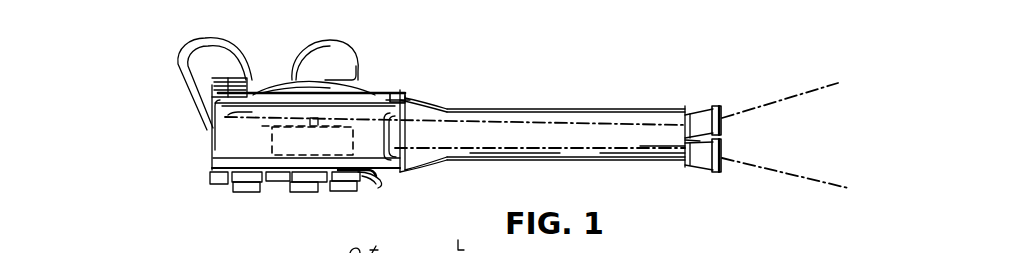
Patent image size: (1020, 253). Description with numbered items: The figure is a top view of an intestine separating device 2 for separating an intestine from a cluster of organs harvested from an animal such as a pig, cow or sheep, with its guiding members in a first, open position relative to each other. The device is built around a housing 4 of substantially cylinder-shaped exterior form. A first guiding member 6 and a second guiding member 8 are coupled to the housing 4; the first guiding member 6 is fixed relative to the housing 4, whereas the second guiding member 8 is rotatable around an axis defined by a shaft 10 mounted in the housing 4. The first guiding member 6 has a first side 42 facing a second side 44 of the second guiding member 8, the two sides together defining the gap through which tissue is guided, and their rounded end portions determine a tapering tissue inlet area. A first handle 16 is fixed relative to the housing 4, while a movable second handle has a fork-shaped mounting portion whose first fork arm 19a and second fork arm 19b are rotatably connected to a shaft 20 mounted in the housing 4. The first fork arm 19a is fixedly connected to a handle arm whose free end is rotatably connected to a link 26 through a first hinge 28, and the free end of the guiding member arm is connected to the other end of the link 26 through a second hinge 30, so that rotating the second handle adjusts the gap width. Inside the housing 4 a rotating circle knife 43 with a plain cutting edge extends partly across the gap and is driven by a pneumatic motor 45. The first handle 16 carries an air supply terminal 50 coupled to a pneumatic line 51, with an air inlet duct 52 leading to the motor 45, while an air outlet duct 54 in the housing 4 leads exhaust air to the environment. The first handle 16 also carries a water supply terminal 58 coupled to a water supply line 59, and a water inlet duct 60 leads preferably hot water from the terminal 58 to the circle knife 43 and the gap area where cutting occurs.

The intestine separating device 2 is at (86, 80).
The housing 4 is at (210, 152).
The first guiding member 6 is at (342, 58).
The second guiding member 8 is at (219, 62).
The shaft 10 is at (236, 73).
The first handle 16 is at (587, 122).
The first fork arm 19a is at (362, 174).
The second fork arm 19b is at (366, 88).
The shaft 20 is at (352, 192).
The link 26 is at (278, 187).
The first hinge 28 is at (305, 194).
The second hinge 30 is at (242, 194).
The first side 42 is at (290, 74).
The circle knife 43 is at (212, 124).
The second side 44 is at (240, 68).
The motor 45 is at (274, 132).
The air supply terminal 50 is at (697, 163).
The pneumatic line 51 is at (802, 178).
The air inlet duct 52 is at (657, 147).
The air outlet duct 54 is at (342, 172).
The water supply terminal 58 is at (695, 118).
The water supply line 59 is at (768, 102).
The water inlet duct 60 is at (493, 122).